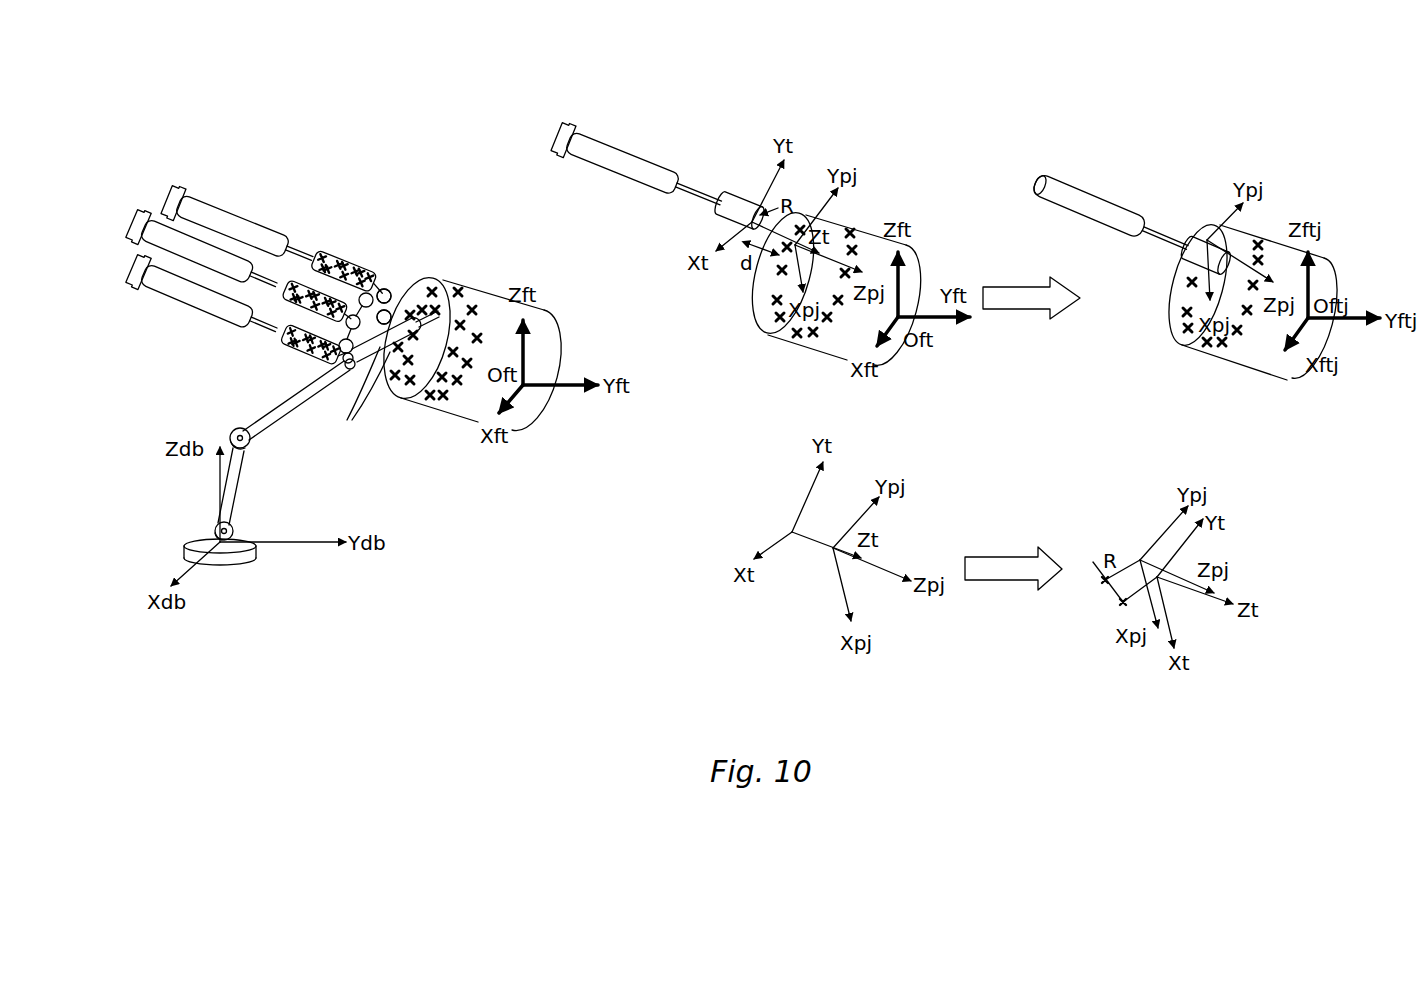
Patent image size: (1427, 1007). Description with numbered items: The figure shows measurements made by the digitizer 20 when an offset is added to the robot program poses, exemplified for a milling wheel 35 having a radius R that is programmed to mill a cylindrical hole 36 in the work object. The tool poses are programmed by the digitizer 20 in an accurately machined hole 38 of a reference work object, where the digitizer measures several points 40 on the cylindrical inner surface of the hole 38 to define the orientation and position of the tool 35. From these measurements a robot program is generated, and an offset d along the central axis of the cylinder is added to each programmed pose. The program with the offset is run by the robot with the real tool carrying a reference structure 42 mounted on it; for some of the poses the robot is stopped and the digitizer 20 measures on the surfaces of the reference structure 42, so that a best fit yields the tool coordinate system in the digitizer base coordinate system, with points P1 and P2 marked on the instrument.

The digitizer 20 is at (242, 409).
The milling wheel 35 is at (742, 206).
The cylindrical hole 36 is at (762, 312).
The accurately machined hole 38 is at (423, 366).
The points 40 is at (356, 401).
The reference structure 42 is at (378, 291).
The point P1 is at (386, 289).
The point P2 is at (390, 312).